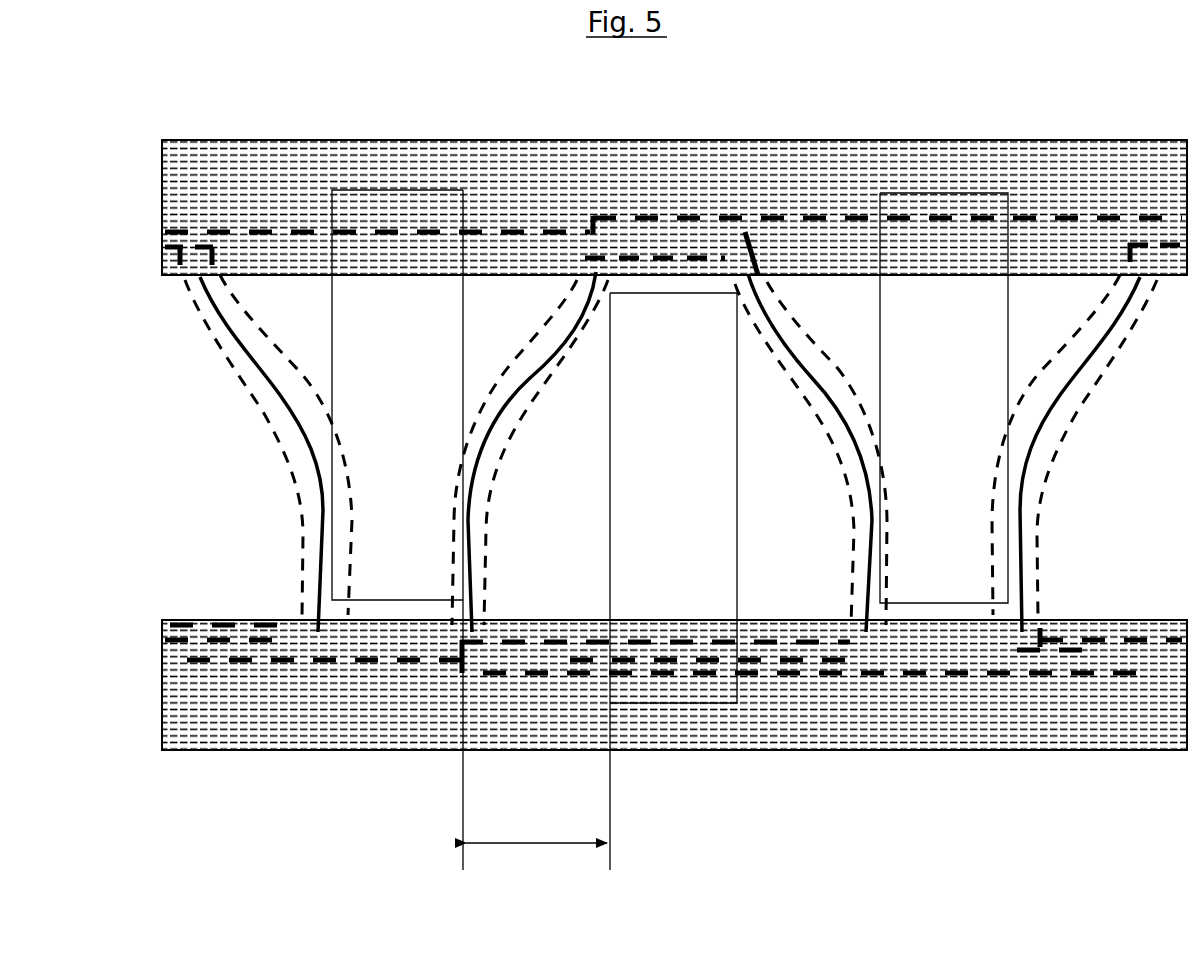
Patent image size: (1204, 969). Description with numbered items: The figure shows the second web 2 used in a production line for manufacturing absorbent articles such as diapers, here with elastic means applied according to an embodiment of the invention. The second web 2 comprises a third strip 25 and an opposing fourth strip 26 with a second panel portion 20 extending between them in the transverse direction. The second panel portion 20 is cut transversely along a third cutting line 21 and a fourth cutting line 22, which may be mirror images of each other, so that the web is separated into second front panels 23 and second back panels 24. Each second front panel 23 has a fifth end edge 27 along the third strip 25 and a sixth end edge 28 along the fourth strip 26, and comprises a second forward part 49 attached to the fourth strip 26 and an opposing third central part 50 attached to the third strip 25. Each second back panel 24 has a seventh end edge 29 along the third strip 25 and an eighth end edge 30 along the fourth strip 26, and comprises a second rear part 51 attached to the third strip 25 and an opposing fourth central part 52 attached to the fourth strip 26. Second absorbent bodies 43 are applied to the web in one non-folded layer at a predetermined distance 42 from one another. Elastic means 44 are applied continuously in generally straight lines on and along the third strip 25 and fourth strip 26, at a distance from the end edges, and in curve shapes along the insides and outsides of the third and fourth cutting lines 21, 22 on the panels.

The second web 2 is at (250, 118).
The second panel portion 20 is at (216, 520).
The third cutting line 21 is at (267, 377).
The fourth cutting line 22 is at (563, 345).
The second front panel 23 is at (315, 303).
The second back panel 24 is at (833, 577).
The third strip 25 is at (253, 712).
The fourth strip 26 is at (798, 182).
The fifth end edge 27 is at (418, 622).
The sixth end edge 28 is at (497, 277).
The seventh end edge 29 is at (780, 622).
The eighth end edge 30 is at (697, 278).
The predetermined distance 42 is at (545, 834).
The second absorbent body 43 is at (390, 533).
The elastic means 44 is at (343, 606).
The second forward part 49 is at (850, 308).
The third central part 50 is at (967, 580).
The second rear part 51 is at (693, 597).
The fourth central part 52 is at (622, 262).